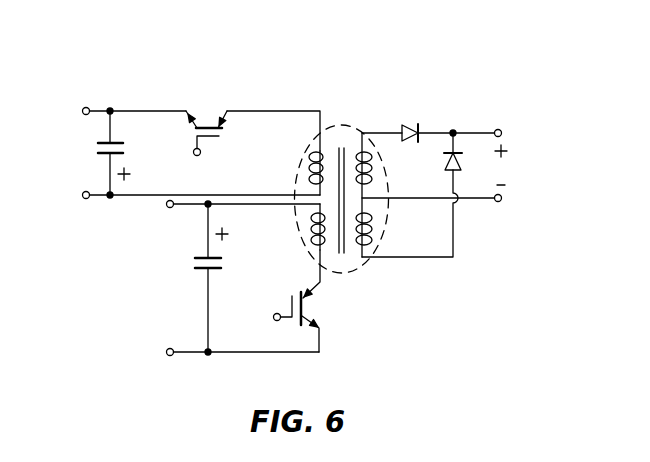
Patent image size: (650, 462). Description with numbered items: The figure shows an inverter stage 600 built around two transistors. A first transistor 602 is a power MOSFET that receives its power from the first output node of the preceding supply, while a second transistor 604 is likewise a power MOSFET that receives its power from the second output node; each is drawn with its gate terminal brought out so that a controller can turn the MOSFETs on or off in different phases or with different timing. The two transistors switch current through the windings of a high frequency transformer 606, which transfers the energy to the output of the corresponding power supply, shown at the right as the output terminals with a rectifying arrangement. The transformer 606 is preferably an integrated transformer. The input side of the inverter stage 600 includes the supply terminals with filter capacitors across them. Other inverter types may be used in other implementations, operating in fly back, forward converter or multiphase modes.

The inverter stage 600 is at (140, 63).
The first transistor 602 is at (332, 325).
The second transistor 604 is at (229, 140).
The high frequency transformer 606 is at (352, 270).